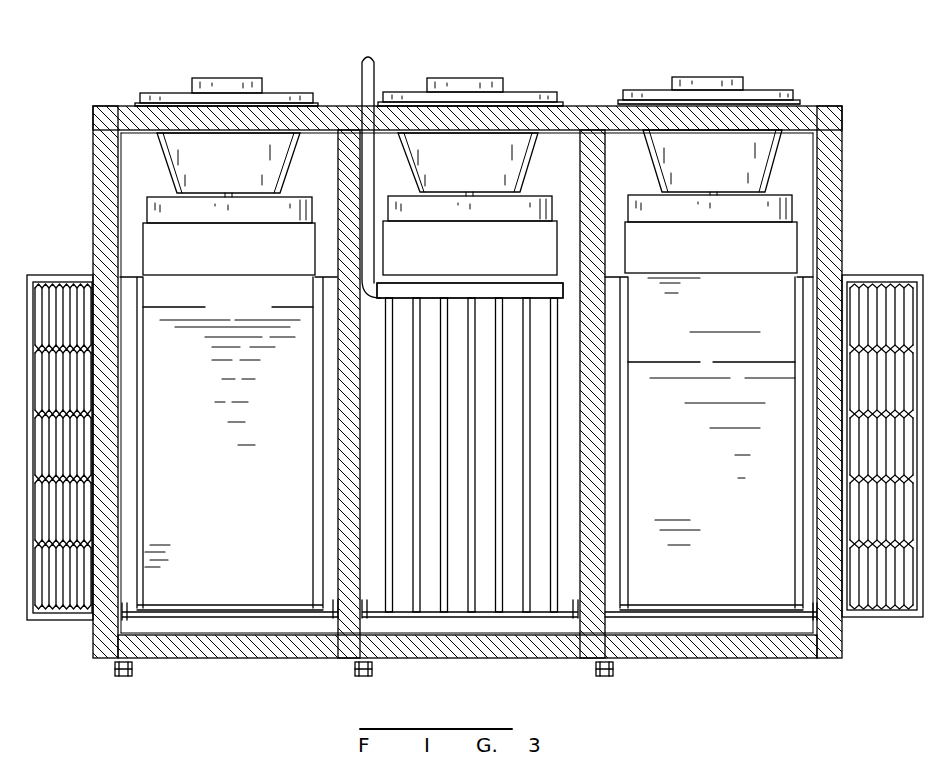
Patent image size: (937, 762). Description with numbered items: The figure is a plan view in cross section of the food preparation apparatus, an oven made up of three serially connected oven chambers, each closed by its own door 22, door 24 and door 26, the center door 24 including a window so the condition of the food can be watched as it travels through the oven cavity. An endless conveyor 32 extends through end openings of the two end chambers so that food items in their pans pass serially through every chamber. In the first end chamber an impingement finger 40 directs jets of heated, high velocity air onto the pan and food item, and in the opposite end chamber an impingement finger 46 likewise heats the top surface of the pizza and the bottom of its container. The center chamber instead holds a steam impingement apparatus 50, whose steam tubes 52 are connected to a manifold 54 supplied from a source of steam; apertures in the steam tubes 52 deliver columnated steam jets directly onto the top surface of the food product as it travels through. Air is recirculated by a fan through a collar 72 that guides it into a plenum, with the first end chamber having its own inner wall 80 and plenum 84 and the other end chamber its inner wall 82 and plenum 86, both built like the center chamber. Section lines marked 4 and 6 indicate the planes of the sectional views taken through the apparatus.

The door 22 is at (187, 660).
The door 24 is at (425, 660).
The door 26 is at (715, 658).
The endless conveyor 32 is at (58, 300).
The impingement finger 40 is at (247, 570).
The impingement finger 46 is at (733, 555).
The steam impingement apparatus 50 is at (562, 372).
The steam tubes 52 is at (442, 355).
The manifold 54 is at (375, 73).
The collar 72 is at (283, 207).
The inner wall 80 is at (200, 170).
The inner wall 82 is at (700, 172).
The plenum 84 is at (230, 257).
The plenum 86 is at (775, 262).
The section line 4- 4 is at (557, 7).
The section line 6- 6 is at (422, 443).